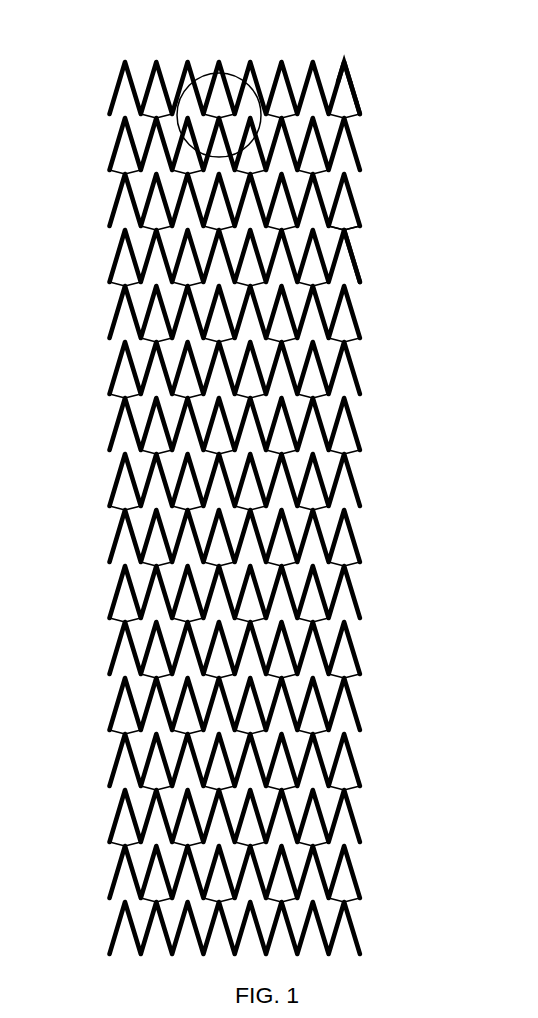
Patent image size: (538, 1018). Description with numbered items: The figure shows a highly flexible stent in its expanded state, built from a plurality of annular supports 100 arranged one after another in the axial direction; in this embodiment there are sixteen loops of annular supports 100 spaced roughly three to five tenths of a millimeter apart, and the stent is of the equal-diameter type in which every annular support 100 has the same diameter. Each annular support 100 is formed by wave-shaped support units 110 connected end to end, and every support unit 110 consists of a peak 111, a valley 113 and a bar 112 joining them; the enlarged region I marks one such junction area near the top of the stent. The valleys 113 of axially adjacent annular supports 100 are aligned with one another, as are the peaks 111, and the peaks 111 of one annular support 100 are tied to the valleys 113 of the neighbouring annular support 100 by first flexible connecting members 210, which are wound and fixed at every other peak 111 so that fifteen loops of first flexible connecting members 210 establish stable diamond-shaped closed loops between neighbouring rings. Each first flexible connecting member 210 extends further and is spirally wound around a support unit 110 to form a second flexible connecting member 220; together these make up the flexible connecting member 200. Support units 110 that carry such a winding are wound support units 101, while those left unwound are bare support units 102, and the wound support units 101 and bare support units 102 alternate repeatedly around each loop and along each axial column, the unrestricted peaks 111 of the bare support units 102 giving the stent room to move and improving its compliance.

The annular support 100 is at (187, 508).
The wound support unit 101 is at (373, 342).
The bare support unit 102 is at (373, 398).
The support unit 110 is at (305, 239).
The peak 111 is at (345, 63).
The bar 112 is at (357, 90).
The valley 113 is at (358, 112).
The flexible connecting member 200 is at (423, 261).
The first flexible connecting member 210 is at (349, 231).
The second flexible connecting member 220 is at (356, 264).
The enlarged detail region I is at (204, 70).